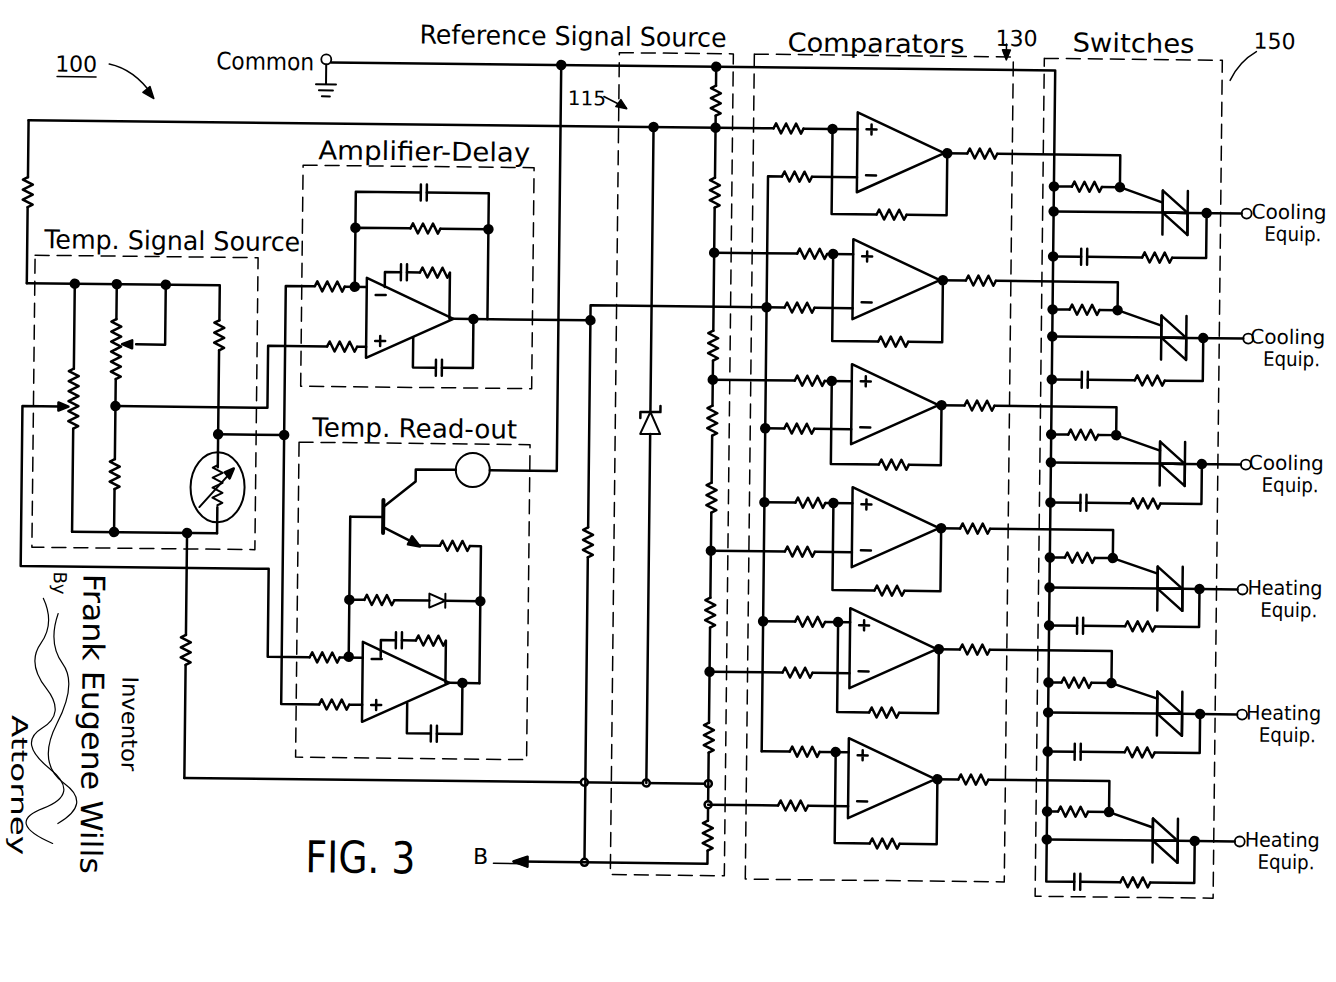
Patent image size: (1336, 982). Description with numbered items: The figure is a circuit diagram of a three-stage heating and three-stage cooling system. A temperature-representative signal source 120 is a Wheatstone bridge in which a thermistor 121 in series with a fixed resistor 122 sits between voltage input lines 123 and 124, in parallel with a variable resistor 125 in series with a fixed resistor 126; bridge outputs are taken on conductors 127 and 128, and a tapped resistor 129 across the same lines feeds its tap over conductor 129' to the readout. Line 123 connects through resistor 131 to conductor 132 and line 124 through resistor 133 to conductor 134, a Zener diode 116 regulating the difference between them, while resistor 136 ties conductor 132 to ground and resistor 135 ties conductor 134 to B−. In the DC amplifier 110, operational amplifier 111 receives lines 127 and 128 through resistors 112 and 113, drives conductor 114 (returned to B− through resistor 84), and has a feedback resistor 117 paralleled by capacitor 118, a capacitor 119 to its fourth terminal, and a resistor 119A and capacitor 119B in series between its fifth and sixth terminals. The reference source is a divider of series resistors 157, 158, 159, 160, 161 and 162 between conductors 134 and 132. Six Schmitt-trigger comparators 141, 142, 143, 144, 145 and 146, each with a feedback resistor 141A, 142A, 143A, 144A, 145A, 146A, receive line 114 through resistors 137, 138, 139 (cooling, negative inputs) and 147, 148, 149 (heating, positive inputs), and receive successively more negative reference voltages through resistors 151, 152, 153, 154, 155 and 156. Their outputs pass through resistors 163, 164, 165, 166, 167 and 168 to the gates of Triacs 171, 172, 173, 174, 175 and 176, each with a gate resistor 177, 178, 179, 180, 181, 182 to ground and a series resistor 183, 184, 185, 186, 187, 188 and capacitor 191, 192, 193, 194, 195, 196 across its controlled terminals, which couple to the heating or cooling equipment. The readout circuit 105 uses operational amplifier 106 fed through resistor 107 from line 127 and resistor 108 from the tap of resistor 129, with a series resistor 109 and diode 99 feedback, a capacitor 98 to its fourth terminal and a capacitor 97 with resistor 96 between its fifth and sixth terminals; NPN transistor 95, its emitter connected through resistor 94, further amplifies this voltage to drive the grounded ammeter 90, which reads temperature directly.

The resistor 84 is at (572, 593).
The ammeter 90 is at (487, 482).
The resistor 94 is at (449, 600).
The NPN transistor 95 is at (375, 510).
The resistor 96 is at (428, 635).
The capacitor 97 is at (400, 636).
The capacitor 98 is at (435, 712).
The diode 99 is at (456, 593).
The temperature readout circuit 105 is at (299, 730).
The operational amplifier 106 is at (421, 682).
The resistor 107 is at (323, 572).
The resistor 108 is at (332, 647).
The resistor 109 is at (388, 589).
The DC amplifier 110 is at (300, 186).
The operational amplifier 111 is at (478, 319).
The resistor 112 is at (238, 365).
The resistor 113 is at (340, 276).
The conductor 114 is at (589, 306).
The Zener diode 116 is at (658, 405).
The feedback resistor 117 is at (421, 262).
The feedback capacitor 118 is at (422, 199).
The capacitor 119 is at (443, 347).
The resistor 119A is at (432, 268).
The capacitor 119B is at (408, 268).
The temperature-representative signal source 120 is at (220, 554).
The thermistor 121 is at (195, 462).
The fixed resistor 122 is at (212, 340).
The voltage input line 123 is at (182, 290).
The voltage input line 124 is at (142, 538).
The variable resistor 125 is at (122, 370).
The fixed resistor 126 is at (132, 495).
The conductor 127 is at (212, 438).
The conductor 128 is at (284, 300).
The resistor with movable tap 129 is at (167, 470).
The conductor 129' is at (142, 581).
The resistor 131 is at (43, 201).
The conductor 132 is at (150, 128).
The resistor 133 is at (203, 655).
The conductor 134 is at (240, 784).
The resistor 135 is at (613, 844).
The resistor 136 is at (699, 121).
The resistor 137 is at (810, 448).
The resistor 138 is at (810, 294).
The resistor 139 is at (806, 419).
The operational amplifier 141 is at (904, 152).
The feedback resistor 141A is at (890, 174).
The operational amplifier 142 is at (899, 279).
The feedback resistor 142A is at (887, 300).
The operational amplifier 143 is at (898, 404).
The feedback resistor 143A is at (886, 425).
The operational amplifier 144 is at (899, 527).
The feedback resistor 144A is at (886, 549).
The operational amplifier 145 is at (896, 648).
The feedback resistor 145A is at (888, 670).
The operational amplifier 146 is at (895, 778).
The feedback resistor 146A is at (886, 800).
The resistor 147 is at (806, 492).
The resistor 148 is at (804, 611).
The resistor 149 is at (805, 741).
The resistor 151 is at (813, 117).
The resistor 152 is at (783, 244).
The resistor 153 is at (782, 370).
The resistor 154 is at (781, 542).
The resistor 155 is at (780, 662).
The resistor 156 is at (778, 816).
The resistor 157 is at (689, 771).
The resistor 158 is at (692, 660).
The resistor 159 is at (692, 540).
The resistor 160 is at (694, 443).
The resistor 161 is at (695, 367).
The resistor 162 is at (697, 253).
The resistor 163 is at (1032, 156).
The resistor 164 is at (1029, 281).
The resistor 165 is at (1027, 406).
The resistor 166 is at (1026, 529).
The resistor 167 is at (1024, 653).
The resistor 168 is at (1022, 782).
The Triac 171 is at (1150, 200).
The Triac 172 is at (1151, 326).
The Triac 173 is at (1149, 452).
The Triac 174 is at (1146, 577).
The Triac 175 is at (1146, 703).
The Triac 176 is at (1144, 830).
The gate resistor 177 is at (1087, 175).
The gate resistor 178 is at (1085, 299).
The gate resistor 179 is at (1083, 424).
The gate resistor 180 is at (1081, 547).
The gate resistor 181 is at (1079, 673).
The gate resistor 182 is at (1078, 802).
The series resistor 183 is at (1171, 237).
The series resistor 184 is at (1166, 361).
The series resistor 185 is at (1162, 486).
The series resistor 186 is at (1159, 610).
The series resistor 187 is at (1157, 735).
The series resistor 188 is at (1151, 864).
The capacitor 191 is at (1095, 246).
The capacitor 192 is at (1091, 369).
The capacitor 193 is at (1088, 492).
The capacitor 194 is at (1085, 616).
The capacitor 195 is at (1084, 742).
The capacitor 196 is at (1087, 874).